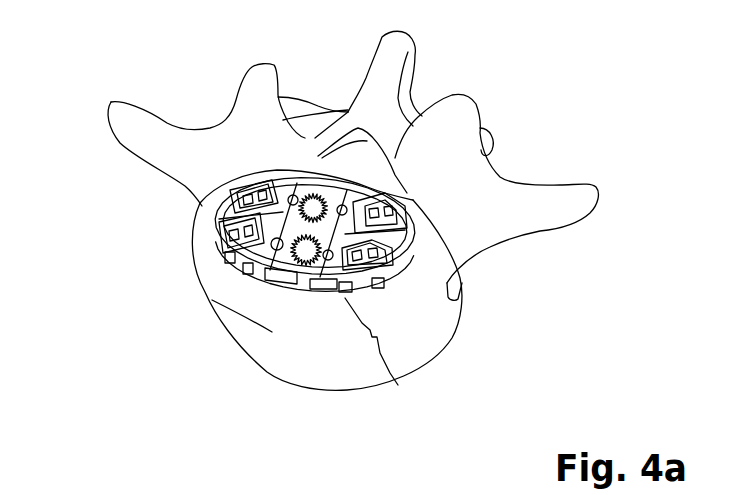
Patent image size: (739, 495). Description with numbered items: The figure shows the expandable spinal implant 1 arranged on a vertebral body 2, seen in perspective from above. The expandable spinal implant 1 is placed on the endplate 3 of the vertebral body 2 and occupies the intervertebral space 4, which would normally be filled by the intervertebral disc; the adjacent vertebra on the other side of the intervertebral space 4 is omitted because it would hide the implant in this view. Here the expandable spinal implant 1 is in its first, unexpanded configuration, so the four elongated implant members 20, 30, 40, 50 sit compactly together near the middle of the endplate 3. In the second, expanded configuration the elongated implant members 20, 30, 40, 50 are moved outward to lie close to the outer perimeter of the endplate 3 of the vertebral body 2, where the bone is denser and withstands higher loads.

The expandable spinal implant 1 is at (268, 248).
The vertebral body 2 is at (243, 350).
The endplate 3 is at (392, 310).
The intervertebral space 4 is at (442, 268).
The elongated implant member 20 is at (265, 176).
The elongated implant member 30 is at (260, 279).
The elongated implant member 40 is at (335, 291).
The elongated implant member 50 is at (390, 195).